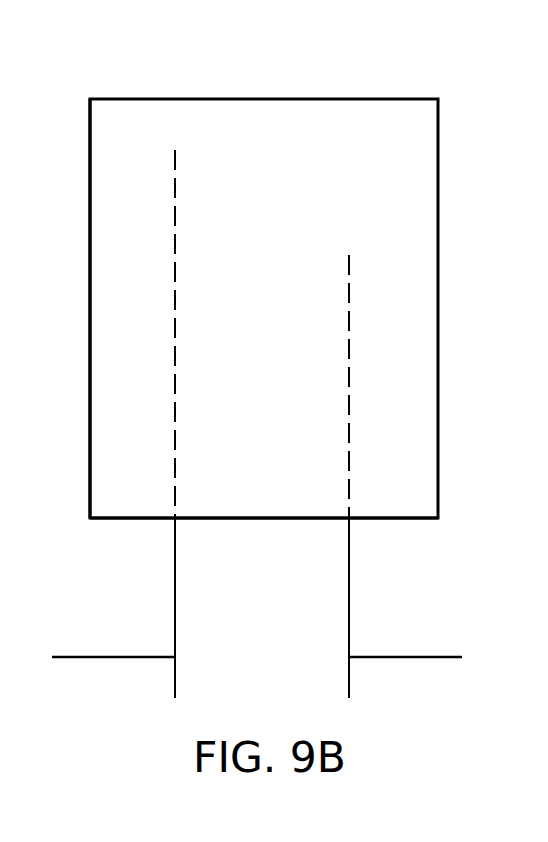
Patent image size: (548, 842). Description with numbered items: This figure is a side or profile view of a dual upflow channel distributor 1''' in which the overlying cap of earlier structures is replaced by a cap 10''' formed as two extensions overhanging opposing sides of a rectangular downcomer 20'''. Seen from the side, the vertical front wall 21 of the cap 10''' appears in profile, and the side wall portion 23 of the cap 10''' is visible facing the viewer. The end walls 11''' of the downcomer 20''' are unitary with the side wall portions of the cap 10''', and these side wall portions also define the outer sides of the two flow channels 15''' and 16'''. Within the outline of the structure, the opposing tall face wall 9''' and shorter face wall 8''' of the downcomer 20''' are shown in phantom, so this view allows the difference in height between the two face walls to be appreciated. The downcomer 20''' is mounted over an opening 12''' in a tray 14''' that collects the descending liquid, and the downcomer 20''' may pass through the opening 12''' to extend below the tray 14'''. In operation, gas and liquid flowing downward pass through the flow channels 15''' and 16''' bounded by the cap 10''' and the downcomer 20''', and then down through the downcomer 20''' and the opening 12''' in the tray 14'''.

The distributor 1''' is at (82, 36).
The cap 10''' is at (264, 282).
The side wall portion 23 is at (378, 161).
The vertical front wall 21 is at (90, 190).
The flow channel 16''' is at (99, 308).
The tall face wall 9''' is at (105, 334).
The shorter face wall 8''' is at (311, 386).
The flow channel 15''' is at (264, 536).
The end wall 11''' is at (262, 608).
The opening 12''' is at (262, 686).
The downcomer 20''' is at (113, 612).
The tray 14''' is at (405, 633).